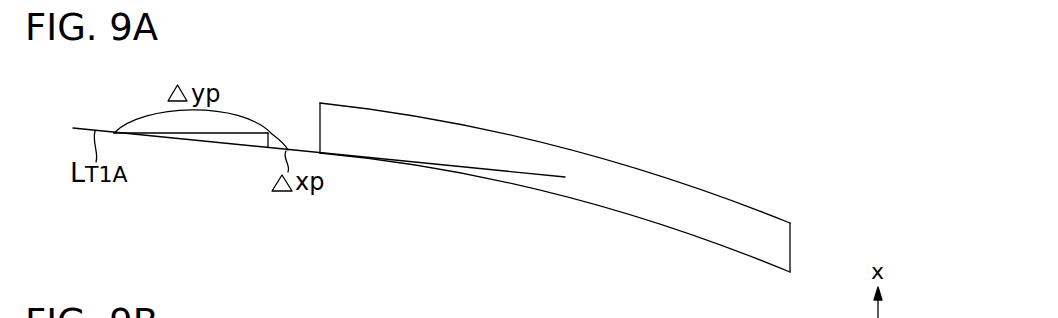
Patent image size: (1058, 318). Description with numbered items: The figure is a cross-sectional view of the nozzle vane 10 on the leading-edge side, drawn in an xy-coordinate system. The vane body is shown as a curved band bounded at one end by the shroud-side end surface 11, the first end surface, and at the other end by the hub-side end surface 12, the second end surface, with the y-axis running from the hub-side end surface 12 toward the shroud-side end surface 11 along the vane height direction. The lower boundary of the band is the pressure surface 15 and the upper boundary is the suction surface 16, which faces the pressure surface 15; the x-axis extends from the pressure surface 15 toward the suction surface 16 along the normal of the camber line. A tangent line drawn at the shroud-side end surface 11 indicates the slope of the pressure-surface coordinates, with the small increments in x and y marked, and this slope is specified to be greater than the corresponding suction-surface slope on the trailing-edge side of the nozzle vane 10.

The nozzle vane 10 is at (718, 207).
The shroud-side end surface 11 is at (318, 128).
The hub-side end surface 12 is at (791, 242).
The pressure surface 15 is at (591, 204).
The suction surface 16 is at (591, 155).